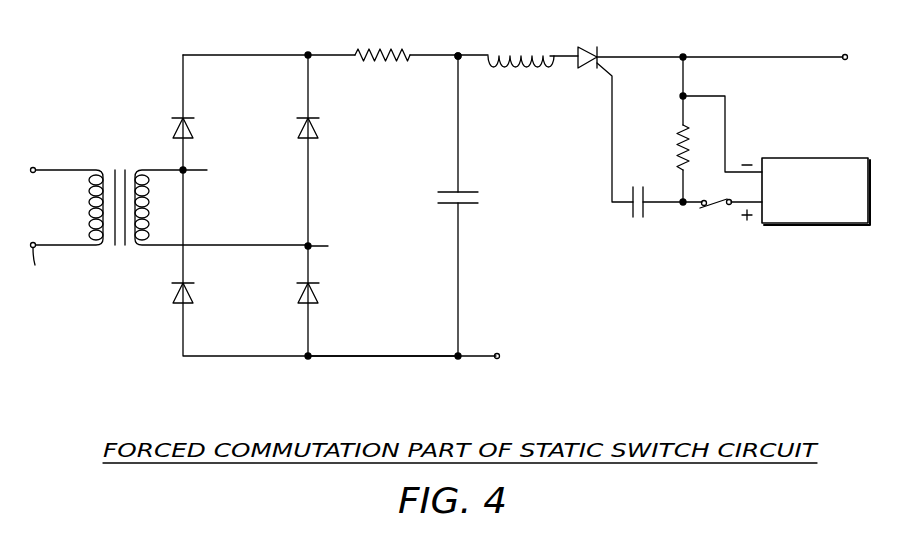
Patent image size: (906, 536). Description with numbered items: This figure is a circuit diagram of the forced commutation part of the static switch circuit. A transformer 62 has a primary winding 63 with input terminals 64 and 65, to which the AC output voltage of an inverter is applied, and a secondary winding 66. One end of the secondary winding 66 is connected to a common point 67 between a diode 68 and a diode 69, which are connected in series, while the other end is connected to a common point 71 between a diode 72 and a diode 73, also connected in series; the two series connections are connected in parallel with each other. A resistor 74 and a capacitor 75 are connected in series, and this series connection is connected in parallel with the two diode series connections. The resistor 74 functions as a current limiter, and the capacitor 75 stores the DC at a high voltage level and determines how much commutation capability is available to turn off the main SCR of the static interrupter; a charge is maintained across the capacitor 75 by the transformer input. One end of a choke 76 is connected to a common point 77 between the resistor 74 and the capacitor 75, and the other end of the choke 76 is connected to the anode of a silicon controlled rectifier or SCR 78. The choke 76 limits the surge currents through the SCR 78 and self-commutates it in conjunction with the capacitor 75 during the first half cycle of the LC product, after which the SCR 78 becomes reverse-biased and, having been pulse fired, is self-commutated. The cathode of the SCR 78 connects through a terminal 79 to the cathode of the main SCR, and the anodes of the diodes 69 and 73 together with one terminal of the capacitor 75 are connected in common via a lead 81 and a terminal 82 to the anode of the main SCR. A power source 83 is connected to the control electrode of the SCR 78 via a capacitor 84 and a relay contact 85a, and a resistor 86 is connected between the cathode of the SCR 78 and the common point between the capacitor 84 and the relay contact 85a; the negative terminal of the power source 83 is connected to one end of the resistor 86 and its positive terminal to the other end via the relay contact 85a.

The transformer 62 is at (135, 165).
The primary winding 63 is at (90, 203).
The input terminal 64 is at (40, 156).
The input terminal 65 is at (46, 269).
The secondary winding 66 is at (150, 201).
The common point 67 is at (209, 181).
The diode 68 is at (172, 126).
The diode 69 is at (172, 300).
The common point 71 is at (331, 247).
The diode 72 is at (320, 135).
The diode 73 is at (320, 295).
The resistor 74 is at (400, 48).
The capacitor 75 is at (438, 195).
The choke 76 is at (530, 56).
The common point 77 is at (466, 47).
The silicon controlled rectifier 78 is at (582, 46).
The terminal 79 is at (845, 54).
The lead 81 is at (381, 358).
The terminal 82 is at (499, 359).
The power source 83 is at (840, 224).
The capacitor 84 is at (638, 221).
The relay contact 85a is at (708, 210).
The resistor 86 is at (678, 142).